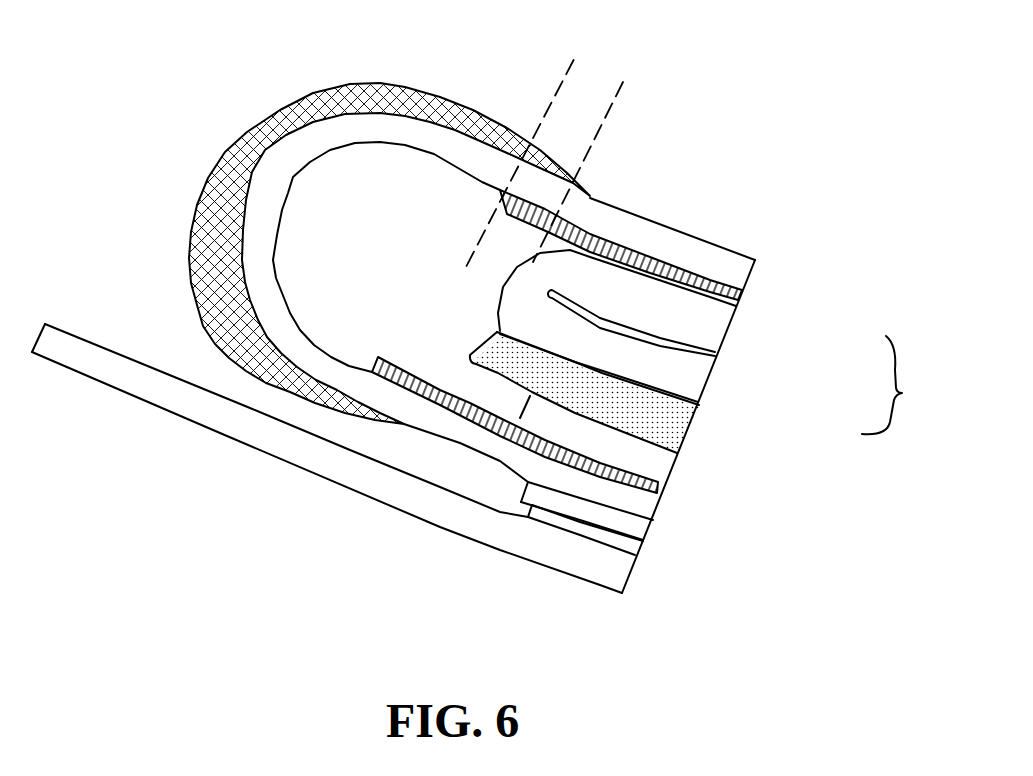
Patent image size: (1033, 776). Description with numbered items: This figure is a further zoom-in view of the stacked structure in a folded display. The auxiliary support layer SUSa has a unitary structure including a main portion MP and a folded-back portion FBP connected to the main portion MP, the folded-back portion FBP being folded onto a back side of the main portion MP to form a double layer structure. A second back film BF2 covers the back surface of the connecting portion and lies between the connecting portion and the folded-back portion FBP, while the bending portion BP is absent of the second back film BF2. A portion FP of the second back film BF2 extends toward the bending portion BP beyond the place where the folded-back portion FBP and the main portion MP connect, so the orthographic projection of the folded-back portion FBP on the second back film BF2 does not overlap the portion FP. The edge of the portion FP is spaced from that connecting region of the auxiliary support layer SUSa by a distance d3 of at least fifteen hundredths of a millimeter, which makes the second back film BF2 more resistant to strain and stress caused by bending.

The bending portion BP is at (297, 157).
The second back film BF2 is at (710, 280).
The portion of the second back film FP is at (525, 265).
The folded-back portion FBP is at (700, 320).
The main portion MP is at (683, 380).
The distance d3 is at (670, 150).
The auxiliary support layer SUSa is at (903, 390).